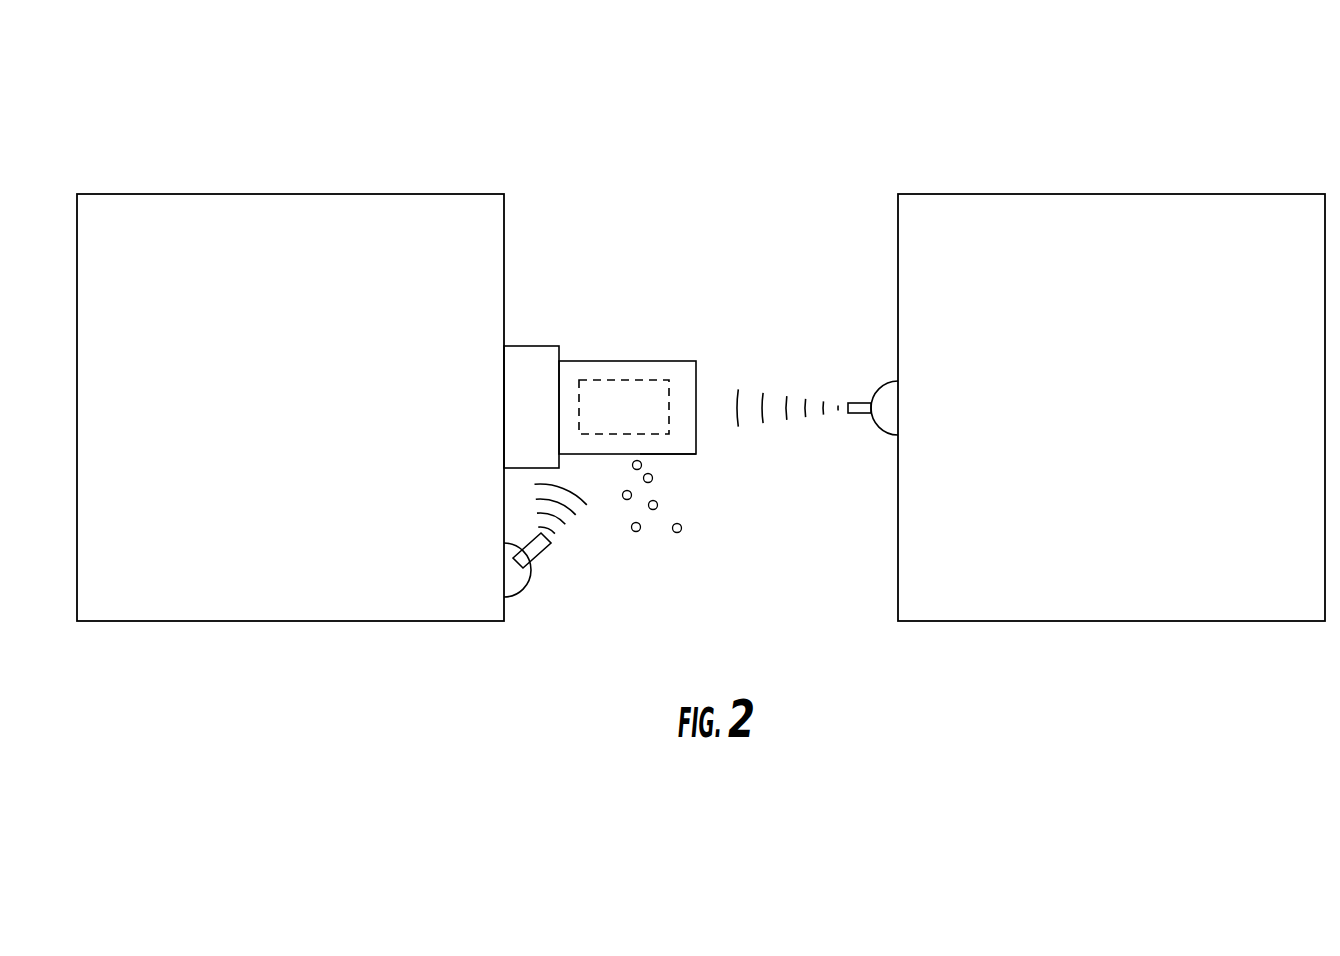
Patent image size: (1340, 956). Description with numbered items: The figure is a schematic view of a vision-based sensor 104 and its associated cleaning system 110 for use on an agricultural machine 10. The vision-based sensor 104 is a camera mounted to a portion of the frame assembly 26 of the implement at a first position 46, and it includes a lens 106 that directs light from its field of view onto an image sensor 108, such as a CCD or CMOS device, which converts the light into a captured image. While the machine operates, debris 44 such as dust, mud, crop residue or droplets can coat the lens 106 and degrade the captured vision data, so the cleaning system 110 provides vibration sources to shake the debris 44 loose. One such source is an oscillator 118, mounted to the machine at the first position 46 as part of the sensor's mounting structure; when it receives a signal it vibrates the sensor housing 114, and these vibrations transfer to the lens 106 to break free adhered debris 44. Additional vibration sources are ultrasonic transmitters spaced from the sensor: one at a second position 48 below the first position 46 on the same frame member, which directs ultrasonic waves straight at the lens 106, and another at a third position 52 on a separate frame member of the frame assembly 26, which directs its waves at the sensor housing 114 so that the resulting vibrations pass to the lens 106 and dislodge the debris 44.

The agricultural machine 10 is at (1186, 124).
The frame assembly 26 is at (285, 102).
The debris 44 is at (668, 558).
The first position 46 is at (490, 407).
The second position 48 is at (448, 555).
The third position 52 is at (917, 365).
The vision-based sensor 104 is at (642, 272).
The lens 106 is at (669, 455).
The image sensor 108 is at (620, 380).
The cleaning system 110 is at (540, 650).
The sensor housing 114 is at (583, 361).
The oscillator 118 is at (525, 346).